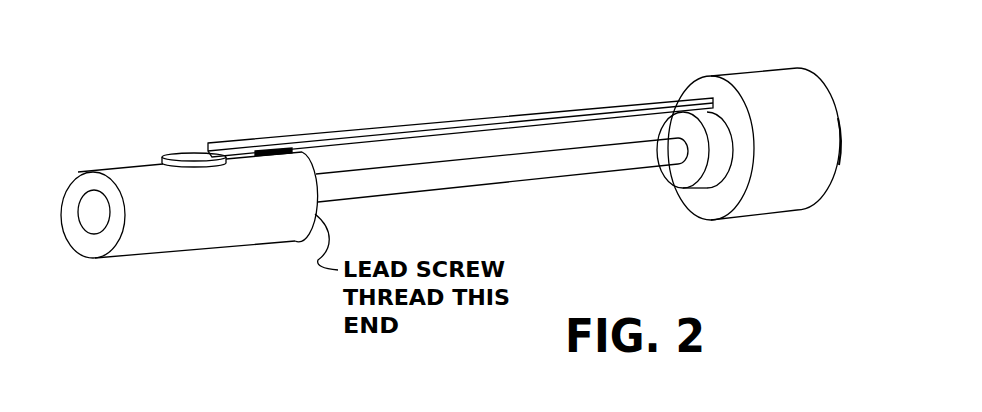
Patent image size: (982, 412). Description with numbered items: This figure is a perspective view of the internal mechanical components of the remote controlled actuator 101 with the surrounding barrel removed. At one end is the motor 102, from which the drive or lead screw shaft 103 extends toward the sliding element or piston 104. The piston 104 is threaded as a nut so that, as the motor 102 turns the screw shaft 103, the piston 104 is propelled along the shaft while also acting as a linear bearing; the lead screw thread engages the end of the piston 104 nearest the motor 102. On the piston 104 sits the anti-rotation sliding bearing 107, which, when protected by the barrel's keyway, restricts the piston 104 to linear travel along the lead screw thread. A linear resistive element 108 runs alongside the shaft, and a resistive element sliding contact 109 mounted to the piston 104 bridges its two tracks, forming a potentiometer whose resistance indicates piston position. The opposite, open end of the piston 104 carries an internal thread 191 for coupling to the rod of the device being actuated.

The remote controlled actuator 101 is at (828, 67).
The motor 102 is at (732, 71).
The screw shaft 103 is at (497, 183).
The piston 104 is at (207, 241).
The anti-rotation sliding bearing 107 is at (193, 153).
The linear resistive element 108 is at (268, 150).
The resistive element sliding contact 109 is at (270, 152).
The internal thread 191 is at (94, 222).